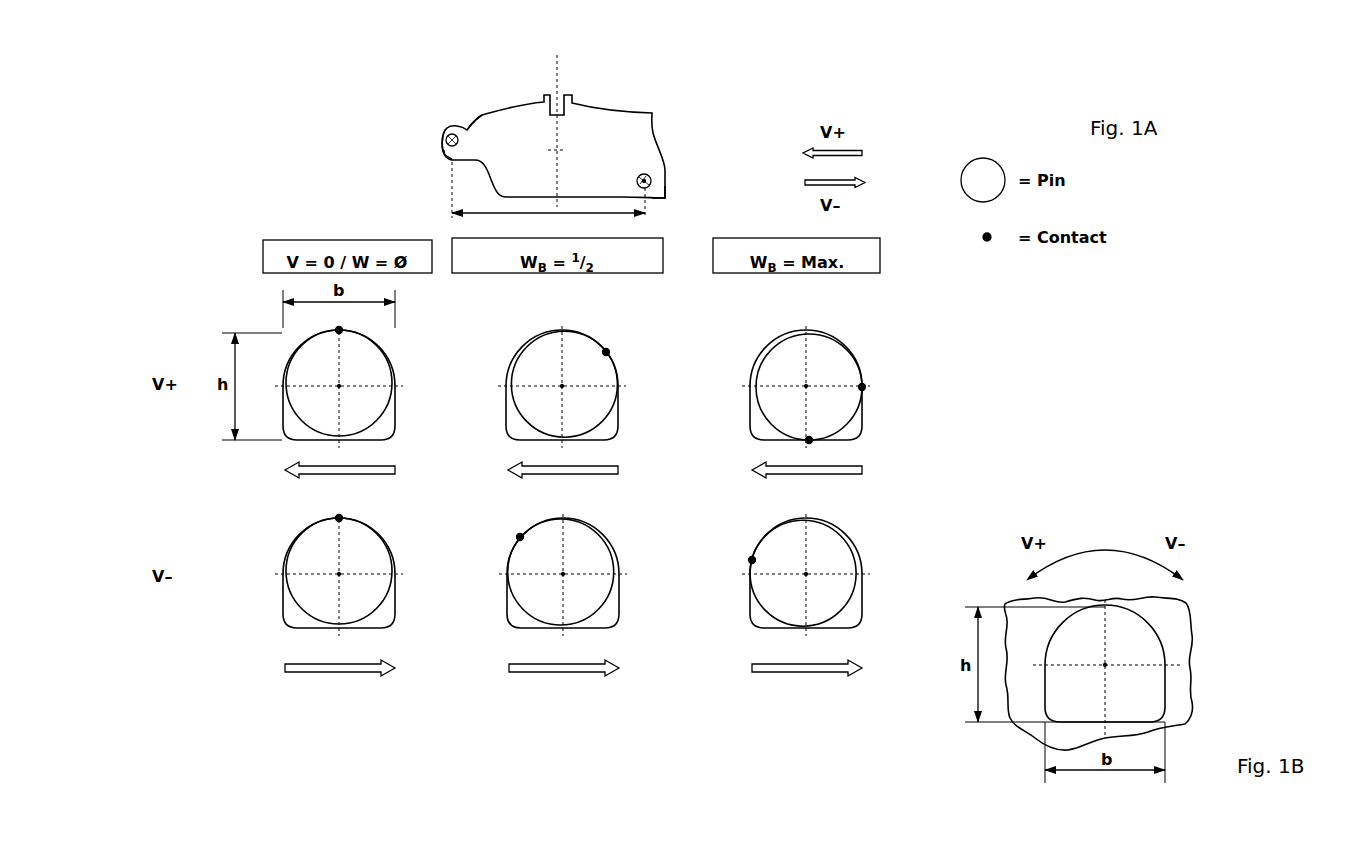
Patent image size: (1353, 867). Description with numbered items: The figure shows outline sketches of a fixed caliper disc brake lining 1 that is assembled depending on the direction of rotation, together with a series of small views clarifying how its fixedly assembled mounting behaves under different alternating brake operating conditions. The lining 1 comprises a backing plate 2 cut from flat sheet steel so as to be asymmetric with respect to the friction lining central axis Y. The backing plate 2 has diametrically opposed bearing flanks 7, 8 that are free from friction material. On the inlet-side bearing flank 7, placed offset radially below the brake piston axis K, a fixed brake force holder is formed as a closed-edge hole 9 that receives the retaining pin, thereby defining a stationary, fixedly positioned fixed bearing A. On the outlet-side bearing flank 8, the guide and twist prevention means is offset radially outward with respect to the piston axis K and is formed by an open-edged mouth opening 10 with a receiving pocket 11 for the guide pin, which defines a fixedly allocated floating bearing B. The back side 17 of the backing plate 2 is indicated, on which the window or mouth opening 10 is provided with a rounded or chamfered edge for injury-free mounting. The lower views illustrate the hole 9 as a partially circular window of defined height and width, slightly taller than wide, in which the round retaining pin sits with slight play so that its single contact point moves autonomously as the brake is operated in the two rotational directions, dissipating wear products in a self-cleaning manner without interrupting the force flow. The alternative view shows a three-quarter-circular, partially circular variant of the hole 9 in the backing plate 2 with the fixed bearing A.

In FIG. 1A, the disc brake lining 1 is at (548, 129).
In FIG. 1A, the backing plate 2 is at (578, 142).
In FIG. 1B, the backing plate 2 is at (1152, 608).
In FIG. 1A, the bearing flank 7 is at (655, 180).
In FIG. 1A, the bearing flank 8 is at (462, 131).
In FIG. 1B, the hole 9 is at (1160, 628).
In FIG. 1A, the mouth opening 10 is at (445, 156).
In FIG. 1A, the receiving pocket 11 is at (480, 134).
In FIG. 1A, the back side 17 is at (612, 176).
In FIG. 1B, the fixed bearing A is at (1107, 667).
In FIG. 1A, the floating bearing B is at (447, 138).
In FIG. 1A, the brake piston axis K is at (572, 140).
In FIG. 1A, the friction lining central axis Y is at (558, 76).